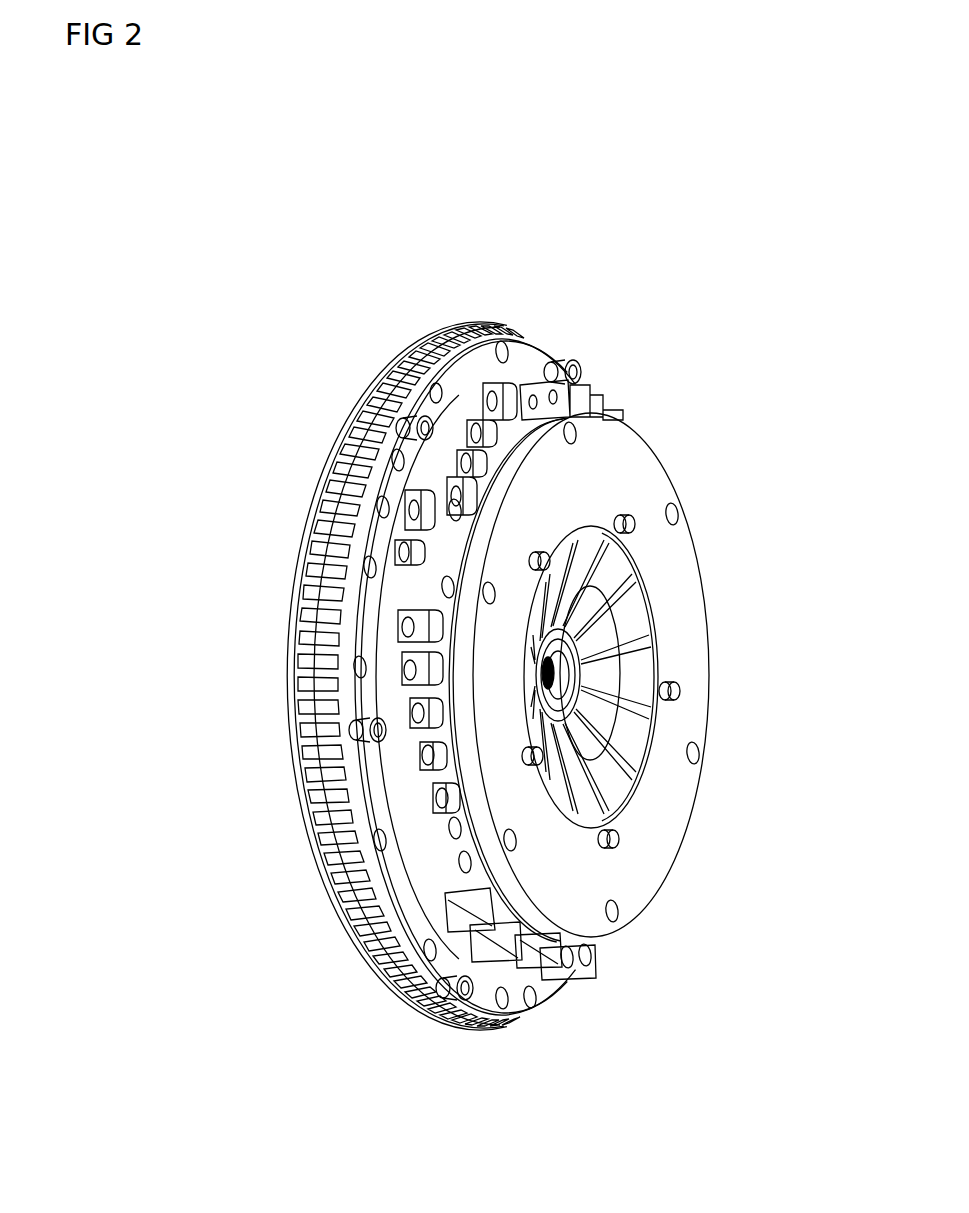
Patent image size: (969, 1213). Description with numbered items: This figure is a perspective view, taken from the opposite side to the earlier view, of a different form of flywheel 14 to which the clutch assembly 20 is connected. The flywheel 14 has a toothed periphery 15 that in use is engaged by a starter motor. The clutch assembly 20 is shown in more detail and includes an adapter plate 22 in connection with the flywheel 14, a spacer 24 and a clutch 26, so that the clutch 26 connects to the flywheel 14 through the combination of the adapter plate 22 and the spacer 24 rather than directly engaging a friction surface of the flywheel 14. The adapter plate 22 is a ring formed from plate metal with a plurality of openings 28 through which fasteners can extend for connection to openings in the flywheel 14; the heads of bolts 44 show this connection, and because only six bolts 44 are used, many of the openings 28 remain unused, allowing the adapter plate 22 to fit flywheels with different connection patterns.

The flywheel 14 is at (323, 762).
The toothed periphery 15 is at (302, 678).
The clutch assembly 20 is at (684, 442).
The adapter plate 22 is at (540, 353).
The spacer 24 is at (413, 522).
The clutch 26 is at (663, 593).
The openings 28 is at (510, 350).
The bolts 44 is at (421, 427).